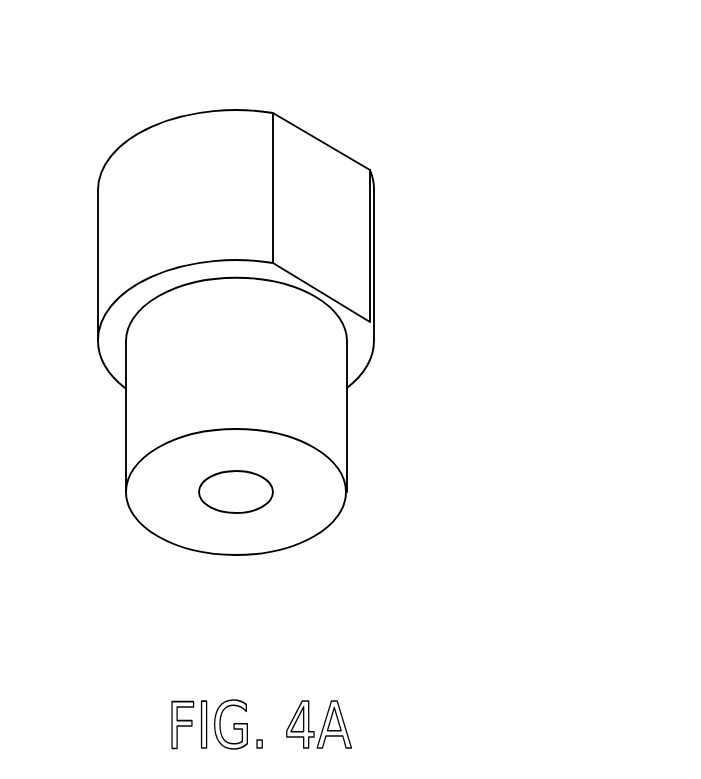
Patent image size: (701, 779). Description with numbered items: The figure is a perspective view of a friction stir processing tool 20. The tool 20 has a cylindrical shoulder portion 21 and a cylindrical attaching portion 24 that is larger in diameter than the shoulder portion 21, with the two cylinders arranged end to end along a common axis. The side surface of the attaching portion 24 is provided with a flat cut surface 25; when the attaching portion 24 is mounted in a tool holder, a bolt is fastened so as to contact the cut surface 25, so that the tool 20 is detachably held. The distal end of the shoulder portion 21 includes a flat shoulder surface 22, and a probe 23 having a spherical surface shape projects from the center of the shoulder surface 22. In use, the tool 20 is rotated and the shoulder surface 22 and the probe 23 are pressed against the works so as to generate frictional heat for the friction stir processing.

The tool 20 is at (395, 98).
The shoulder portion 21 is at (335, 440).
The shoulder surface 22 is at (392, 506).
The probe 23 is at (143, 537).
The attaching portion 24 is at (346, 199).
The cut surface 25 is at (436, 217).